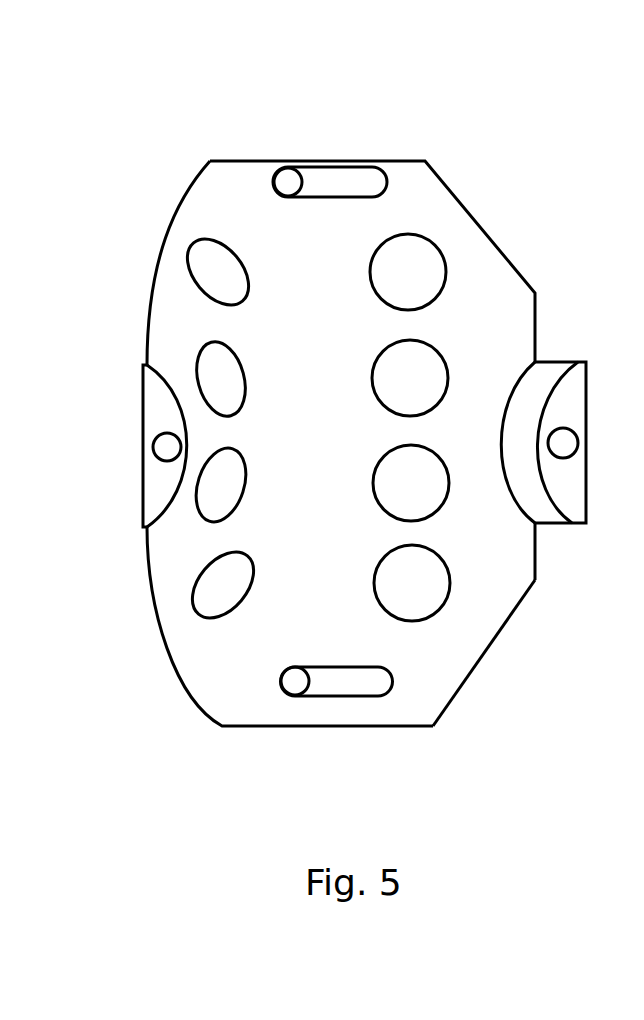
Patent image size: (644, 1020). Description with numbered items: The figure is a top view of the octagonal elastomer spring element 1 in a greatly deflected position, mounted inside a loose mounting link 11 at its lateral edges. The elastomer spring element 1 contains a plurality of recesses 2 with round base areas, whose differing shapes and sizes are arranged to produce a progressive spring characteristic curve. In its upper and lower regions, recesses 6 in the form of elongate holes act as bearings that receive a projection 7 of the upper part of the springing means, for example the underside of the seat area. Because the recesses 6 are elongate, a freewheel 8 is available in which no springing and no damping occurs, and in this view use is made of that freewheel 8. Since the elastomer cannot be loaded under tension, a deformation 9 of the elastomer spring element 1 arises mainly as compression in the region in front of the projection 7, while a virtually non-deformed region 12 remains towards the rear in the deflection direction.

The elastomer spring element 1 is at (556, 115).
The recesses 2 is at (210, 243).
The recesses for receiving a projection 6 is at (387, 168).
The projection 7 is at (297, 170).
The freewheel 8 is at (345, 187).
The deformation 9 is at (165, 705).
The loose mounting link 11 is at (586, 402).
The virtually non-deformed region 12 is at (517, 688).